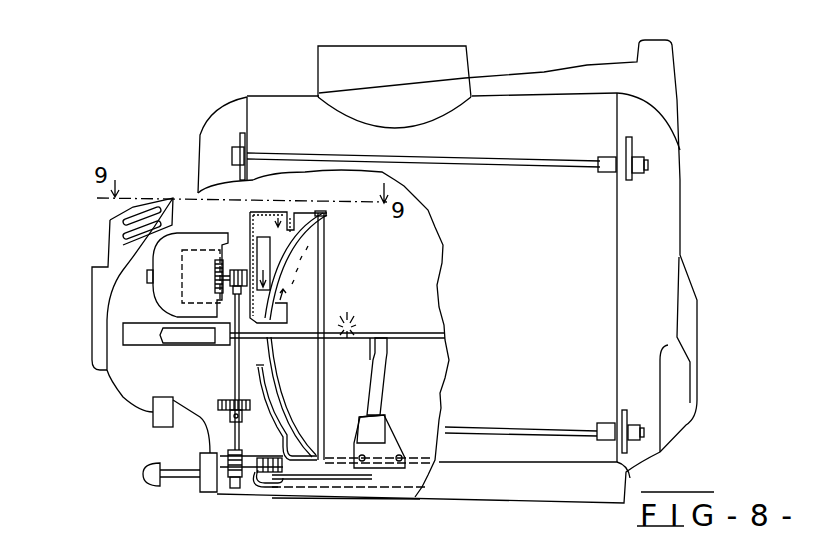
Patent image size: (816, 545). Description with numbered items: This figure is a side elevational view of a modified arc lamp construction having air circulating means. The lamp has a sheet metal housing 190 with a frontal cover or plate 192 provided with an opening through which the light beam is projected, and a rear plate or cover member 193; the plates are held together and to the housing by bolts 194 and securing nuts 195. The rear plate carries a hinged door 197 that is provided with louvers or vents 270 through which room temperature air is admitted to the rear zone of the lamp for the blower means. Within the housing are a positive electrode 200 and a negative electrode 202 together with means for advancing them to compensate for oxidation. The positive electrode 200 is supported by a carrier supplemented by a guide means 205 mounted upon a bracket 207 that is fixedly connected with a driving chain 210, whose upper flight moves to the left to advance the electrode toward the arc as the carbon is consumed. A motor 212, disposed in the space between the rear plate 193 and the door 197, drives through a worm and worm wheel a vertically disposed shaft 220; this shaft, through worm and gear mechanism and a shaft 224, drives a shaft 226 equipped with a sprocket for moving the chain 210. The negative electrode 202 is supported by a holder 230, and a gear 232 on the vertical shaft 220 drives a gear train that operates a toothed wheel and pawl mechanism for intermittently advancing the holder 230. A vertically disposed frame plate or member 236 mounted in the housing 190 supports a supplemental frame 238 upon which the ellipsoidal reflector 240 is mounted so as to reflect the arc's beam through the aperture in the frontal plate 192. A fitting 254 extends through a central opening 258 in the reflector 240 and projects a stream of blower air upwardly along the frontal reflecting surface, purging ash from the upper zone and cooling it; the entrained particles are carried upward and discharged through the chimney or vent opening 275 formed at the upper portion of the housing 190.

The sheet metal housing 190 is at (532, 60).
The frontal cover or plate 192 is at (669, 200).
The rear plate or cover member 193 is at (257, 78).
The bolts 194 is at (567, 146).
The securing nuts 195 is at (634, 158).
The door 197 is at (158, 198).
The positive electrode 200 is at (360, 336).
The negative electrode 202 is at (369, 380).
The guide means 205 is at (383, 372).
The bracket 207 is at (389, 427).
The driving chain 210 is at (344, 463).
The motor 212 is at (160, 288).
The vertically disposed shaft 220 is at (235, 385).
The shaft 224 is at (250, 464).
The shaft 226 is at (285, 478).
The holder 230 is at (160, 343).
The gear 232 is at (229, 412).
The frame plate or member 236 is at (258, 213).
The supplemental frame 238 is at (307, 212).
The reflector 240 is at (304, 237).
The fitting 254 is at (289, 330).
The central opening 258 is at (271, 355).
The louvers or vents 270 is at (123, 237).
The chimney or vent opening 275 is at (326, 57).